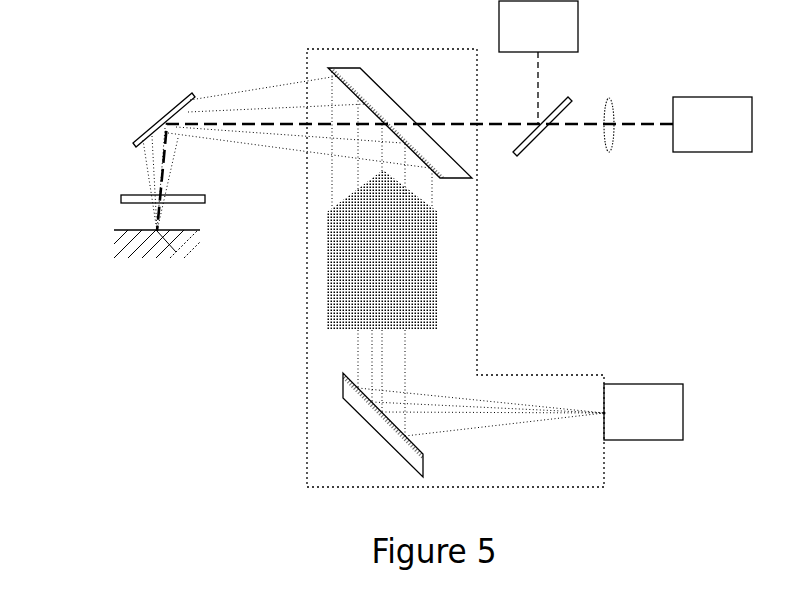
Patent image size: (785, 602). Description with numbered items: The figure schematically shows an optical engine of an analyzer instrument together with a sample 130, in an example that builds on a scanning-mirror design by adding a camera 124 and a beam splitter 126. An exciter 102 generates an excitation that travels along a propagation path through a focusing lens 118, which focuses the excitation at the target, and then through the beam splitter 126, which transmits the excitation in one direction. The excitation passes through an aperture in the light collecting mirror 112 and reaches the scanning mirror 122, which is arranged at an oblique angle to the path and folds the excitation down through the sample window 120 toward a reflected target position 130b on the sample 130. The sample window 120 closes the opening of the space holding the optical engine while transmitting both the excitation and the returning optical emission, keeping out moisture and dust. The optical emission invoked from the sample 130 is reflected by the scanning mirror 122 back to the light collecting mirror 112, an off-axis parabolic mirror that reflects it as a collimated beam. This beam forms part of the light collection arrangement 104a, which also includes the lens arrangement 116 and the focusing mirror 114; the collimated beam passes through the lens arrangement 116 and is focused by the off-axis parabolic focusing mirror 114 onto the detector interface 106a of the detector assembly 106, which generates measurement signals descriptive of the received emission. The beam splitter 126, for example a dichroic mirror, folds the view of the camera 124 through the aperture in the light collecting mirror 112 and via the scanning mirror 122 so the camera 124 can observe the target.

The exciter 102 is at (712, 124).
The light collection arrangement 104a is at (478, 300).
The detector assembly 106 is at (643, 412).
The detector interface 106a is at (604, 413).
The light collecting mirror 112 is at (377, 90).
The focusing mirror 114 is at (350, 407).
The lens arrangement 116 is at (343, 228).
The focusing lens 118 is at (610, 110).
The sample window 120 is at (121, 198).
The scanning mirror 122 is at (140, 133).
The camera 124 is at (538, 26).
The beam splitter 126 is at (536, 138).
The sample 130 is at (135, 252).
The reflected target position 130b is at (176, 252).